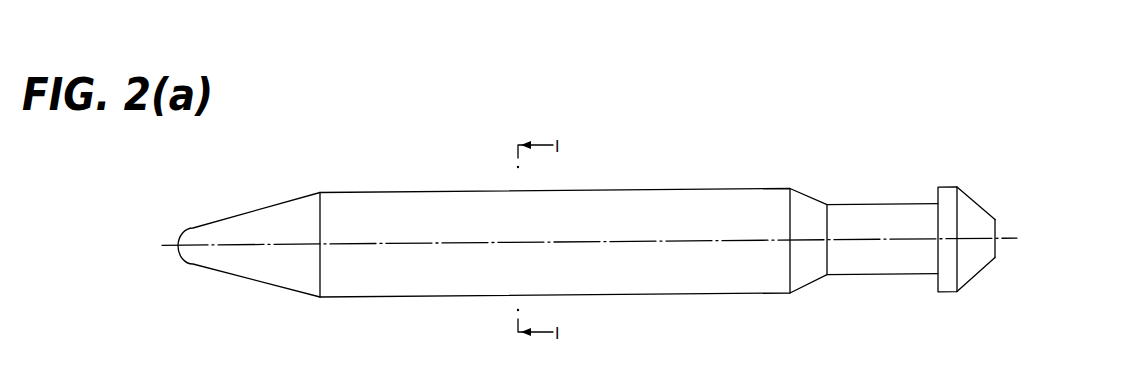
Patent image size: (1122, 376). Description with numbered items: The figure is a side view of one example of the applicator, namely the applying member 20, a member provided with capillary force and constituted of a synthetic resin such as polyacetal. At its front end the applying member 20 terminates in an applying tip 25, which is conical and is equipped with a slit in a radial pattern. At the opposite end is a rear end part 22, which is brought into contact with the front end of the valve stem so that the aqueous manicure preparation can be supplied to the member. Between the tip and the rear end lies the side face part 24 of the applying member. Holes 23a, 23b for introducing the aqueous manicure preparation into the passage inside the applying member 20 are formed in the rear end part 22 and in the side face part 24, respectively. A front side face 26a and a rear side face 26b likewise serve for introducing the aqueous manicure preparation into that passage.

The applying member 20 is at (446, 178).
The rear end part 22 is at (998, 249).
The hole 23a is at (982, 222).
The hole 23b is at (870, 207).
The side face part 24 is at (778, 294).
The applying tip 25 is at (217, 228).
The front side face 26a is at (807, 208).
The rear side face 26b is at (937, 191).